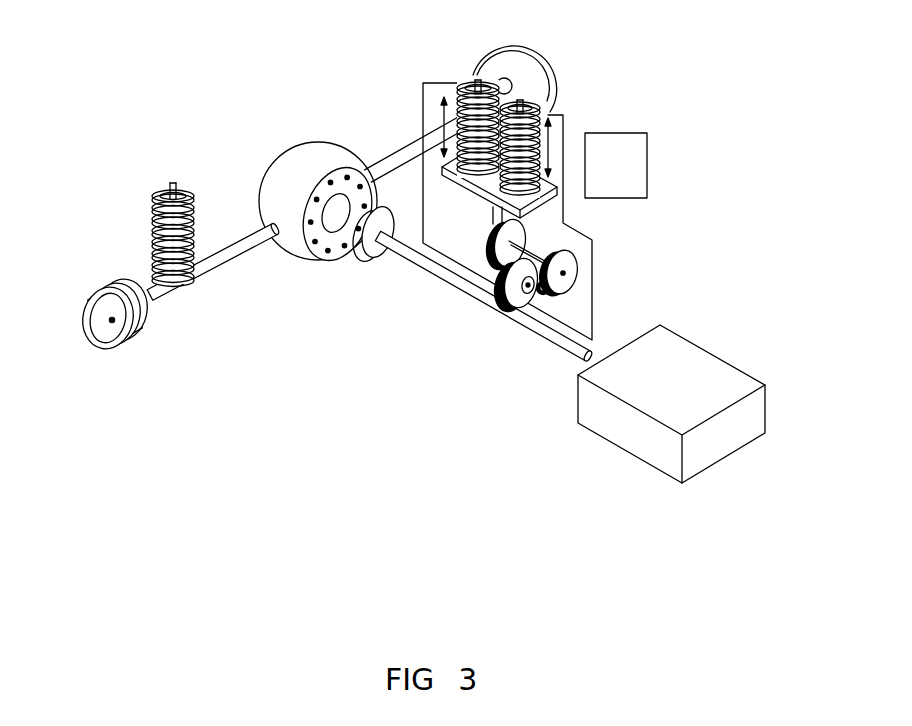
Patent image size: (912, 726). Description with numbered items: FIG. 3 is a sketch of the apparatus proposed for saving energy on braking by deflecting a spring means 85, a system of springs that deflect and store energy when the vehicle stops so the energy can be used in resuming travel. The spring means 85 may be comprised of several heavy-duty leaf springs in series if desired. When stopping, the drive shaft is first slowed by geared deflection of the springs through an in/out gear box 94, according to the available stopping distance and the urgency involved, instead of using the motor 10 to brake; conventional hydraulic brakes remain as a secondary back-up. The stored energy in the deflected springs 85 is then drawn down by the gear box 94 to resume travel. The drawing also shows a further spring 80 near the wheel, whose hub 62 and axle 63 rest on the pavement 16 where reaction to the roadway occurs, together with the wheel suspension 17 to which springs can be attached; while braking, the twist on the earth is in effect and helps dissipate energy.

The motor 10 is at (767, 408).
The pavement 16 is at (150, 316).
The wheel suspension 17 is at (538, 335).
The hub 62 is at (108, 348).
The axle 63 is at (111, 320).
The spring 80 is at (181, 192).
The deflection spring 85 is at (483, 86).
The gear box 94 is at (580, 252).